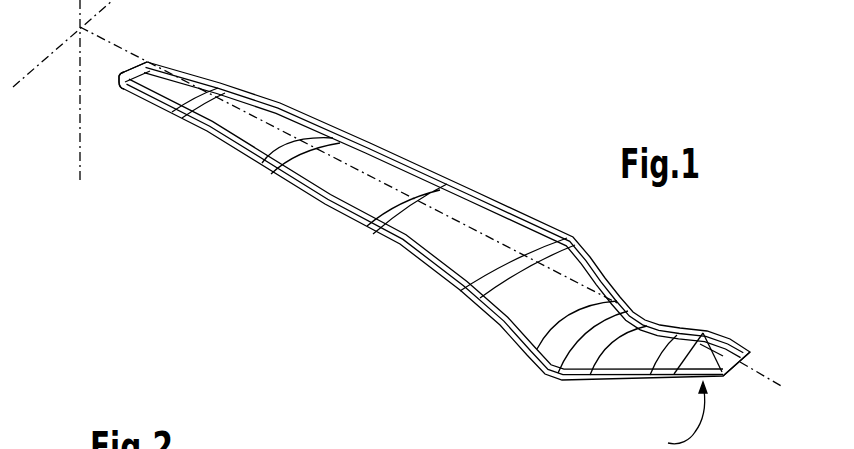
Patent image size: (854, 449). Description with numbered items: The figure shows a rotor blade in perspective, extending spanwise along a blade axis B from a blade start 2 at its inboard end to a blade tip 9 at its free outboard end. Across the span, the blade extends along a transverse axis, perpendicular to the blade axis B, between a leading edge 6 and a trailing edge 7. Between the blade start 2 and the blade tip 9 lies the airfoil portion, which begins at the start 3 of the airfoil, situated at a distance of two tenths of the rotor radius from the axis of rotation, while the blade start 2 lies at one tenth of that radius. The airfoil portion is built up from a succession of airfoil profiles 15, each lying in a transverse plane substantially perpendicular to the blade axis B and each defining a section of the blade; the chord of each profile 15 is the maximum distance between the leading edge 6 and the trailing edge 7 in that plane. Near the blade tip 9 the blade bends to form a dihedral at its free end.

The blade start 2 is at (120, 70).
The start of the airfoil 3 is at (188, 100).
The leading edge 6 is at (301, 207).
The trailing edge 7 is at (512, 192).
The blade tip 9 is at (743, 364).
The airfoil profiles 15 is at (188, 123).
The blade axis B is at (356, 165).